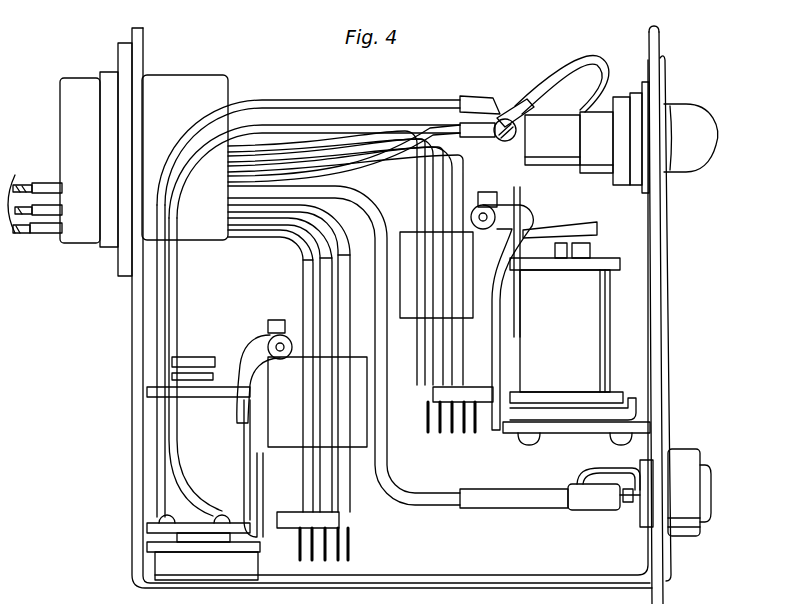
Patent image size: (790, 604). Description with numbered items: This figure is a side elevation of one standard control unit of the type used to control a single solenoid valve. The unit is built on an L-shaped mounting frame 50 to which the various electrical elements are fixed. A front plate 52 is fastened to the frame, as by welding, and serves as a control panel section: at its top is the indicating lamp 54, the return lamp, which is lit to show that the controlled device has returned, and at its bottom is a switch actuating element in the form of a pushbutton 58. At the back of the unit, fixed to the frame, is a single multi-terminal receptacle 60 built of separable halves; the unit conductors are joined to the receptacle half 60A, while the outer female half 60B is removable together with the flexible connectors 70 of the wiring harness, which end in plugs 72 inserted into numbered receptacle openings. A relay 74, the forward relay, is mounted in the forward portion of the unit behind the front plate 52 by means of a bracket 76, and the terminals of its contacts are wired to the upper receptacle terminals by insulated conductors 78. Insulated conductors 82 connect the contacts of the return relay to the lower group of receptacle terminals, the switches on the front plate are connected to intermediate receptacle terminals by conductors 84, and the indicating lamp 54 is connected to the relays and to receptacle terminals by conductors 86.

The L-shaped mounting frame 50 is at (134, 505).
The front plate 52 is at (655, 360).
The indicating lamp 54 is at (694, 108).
The pushbutton 58 is at (711, 496).
The multi-terminal receptacle 60 is at (176, 59).
The receptacle half 60A is at (205, 81).
The outer receptacle half 60B is at (81, 88).
The flexible connectors 70 is at (24, 193).
The plugs 72 is at (56, 210).
The relay 74 is at (607, 310).
The bracket 76 is at (572, 428).
The insulated conductors 78 is at (468, 172).
The insulated conductors 82 is at (301, 278).
The conductors 84 is at (449, 505).
The conductors 86 is at (486, 100).